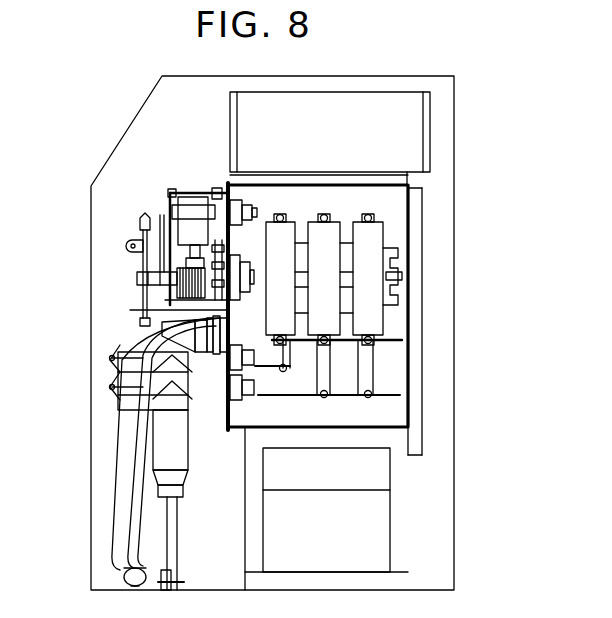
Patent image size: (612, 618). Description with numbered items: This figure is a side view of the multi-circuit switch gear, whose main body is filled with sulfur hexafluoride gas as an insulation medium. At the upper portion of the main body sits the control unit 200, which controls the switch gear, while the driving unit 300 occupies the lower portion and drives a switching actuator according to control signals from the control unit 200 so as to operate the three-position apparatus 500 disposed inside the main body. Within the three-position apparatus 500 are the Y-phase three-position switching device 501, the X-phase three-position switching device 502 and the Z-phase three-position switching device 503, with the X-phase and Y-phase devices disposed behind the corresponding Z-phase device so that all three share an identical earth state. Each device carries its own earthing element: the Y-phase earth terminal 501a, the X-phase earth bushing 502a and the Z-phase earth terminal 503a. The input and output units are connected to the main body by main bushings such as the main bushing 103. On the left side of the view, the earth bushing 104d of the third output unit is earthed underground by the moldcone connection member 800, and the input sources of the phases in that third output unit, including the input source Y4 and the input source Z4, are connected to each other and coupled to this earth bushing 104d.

The control unit 200 is at (388, 129).
The 3-position apparatus 500 is at (396, 212).
The Y-phase 3-position switching device 501 is at (277, 297).
The X-phase 3-position switching device 502 is at (325, 266).
The Z-phase 3-position switching device 503 is at (370, 245).
The Y-phase earth terminal 501a is at (285, 343).
The X-phase earth bushing 502a is at (330, 352).
The Z-phase earth terminal 503a is at (288, 348).
The driving unit 300 is at (378, 528).
The earth bushing 104d is at (160, 313).
The moldcone connection member 800 is at (160, 323).
The main bushing 103 is at (190, 400).
The input source of phase Y Y4 is at (143, 358).
The input source of phase Z Z4 is at (143, 387).